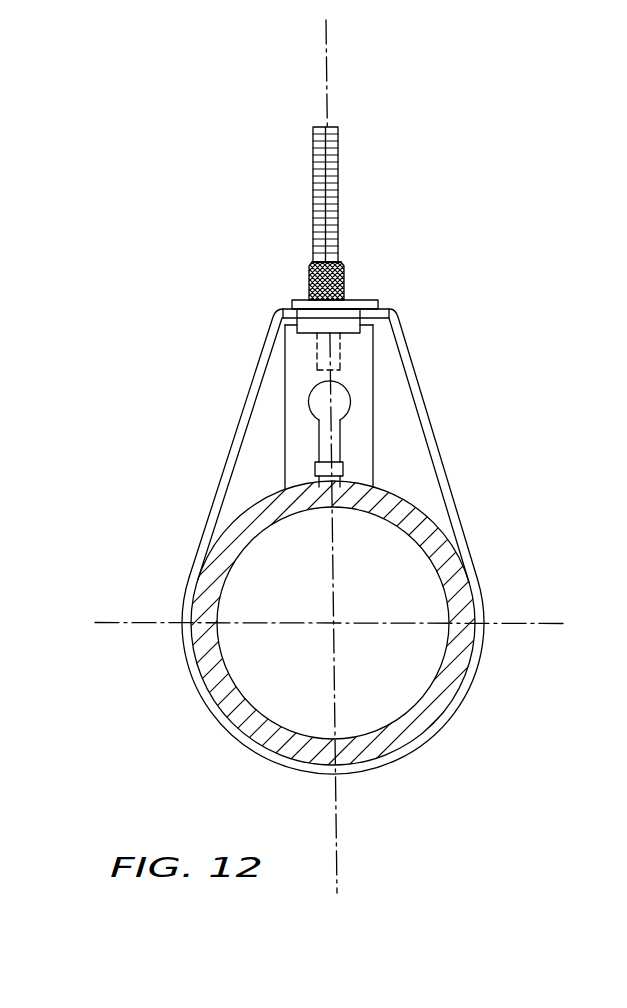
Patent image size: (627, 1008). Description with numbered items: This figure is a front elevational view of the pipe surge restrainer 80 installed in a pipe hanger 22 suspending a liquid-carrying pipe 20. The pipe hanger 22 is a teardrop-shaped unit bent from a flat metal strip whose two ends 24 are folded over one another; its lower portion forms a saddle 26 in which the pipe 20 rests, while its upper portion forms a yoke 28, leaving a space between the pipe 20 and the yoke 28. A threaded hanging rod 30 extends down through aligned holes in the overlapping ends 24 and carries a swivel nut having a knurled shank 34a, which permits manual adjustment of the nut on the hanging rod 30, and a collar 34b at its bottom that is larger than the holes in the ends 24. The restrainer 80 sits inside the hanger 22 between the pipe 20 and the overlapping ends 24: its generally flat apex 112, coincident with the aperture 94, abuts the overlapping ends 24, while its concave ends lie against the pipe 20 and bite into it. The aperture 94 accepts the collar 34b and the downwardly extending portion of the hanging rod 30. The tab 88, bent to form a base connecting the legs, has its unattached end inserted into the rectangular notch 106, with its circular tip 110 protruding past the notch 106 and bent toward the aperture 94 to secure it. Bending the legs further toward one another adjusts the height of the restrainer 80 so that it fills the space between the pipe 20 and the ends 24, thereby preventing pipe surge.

The pipe 20 is at (207, 648).
The pipe hanger 22 is at (223, 476).
The ends 24 is at (285, 303).
The saddle 26 is at (347, 770).
The yoke 28 is at (312, 263).
The hanging rod 30 is at (338, 127).
The knurled shank 34a is at (345, 262).
The collar 34b is at (356, 333).
The pipe surge restrainer 80 is at (264, 427).
The tab 88 is at (334, 434).
The aperture 94 is at (300, 334).
The rectangular notch 106 is at (336, 477).
The circular tip 110 is at (338, 402).
The flat apex 112 is at (380, 300).